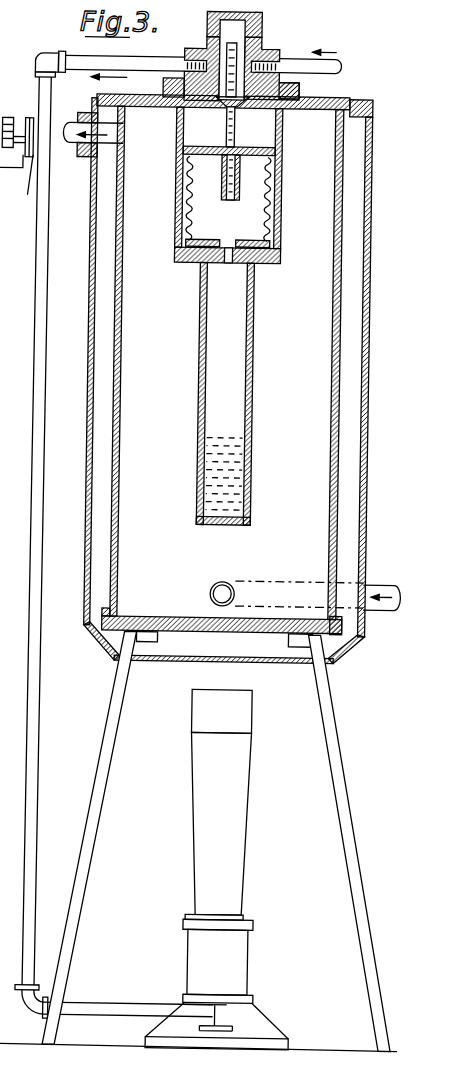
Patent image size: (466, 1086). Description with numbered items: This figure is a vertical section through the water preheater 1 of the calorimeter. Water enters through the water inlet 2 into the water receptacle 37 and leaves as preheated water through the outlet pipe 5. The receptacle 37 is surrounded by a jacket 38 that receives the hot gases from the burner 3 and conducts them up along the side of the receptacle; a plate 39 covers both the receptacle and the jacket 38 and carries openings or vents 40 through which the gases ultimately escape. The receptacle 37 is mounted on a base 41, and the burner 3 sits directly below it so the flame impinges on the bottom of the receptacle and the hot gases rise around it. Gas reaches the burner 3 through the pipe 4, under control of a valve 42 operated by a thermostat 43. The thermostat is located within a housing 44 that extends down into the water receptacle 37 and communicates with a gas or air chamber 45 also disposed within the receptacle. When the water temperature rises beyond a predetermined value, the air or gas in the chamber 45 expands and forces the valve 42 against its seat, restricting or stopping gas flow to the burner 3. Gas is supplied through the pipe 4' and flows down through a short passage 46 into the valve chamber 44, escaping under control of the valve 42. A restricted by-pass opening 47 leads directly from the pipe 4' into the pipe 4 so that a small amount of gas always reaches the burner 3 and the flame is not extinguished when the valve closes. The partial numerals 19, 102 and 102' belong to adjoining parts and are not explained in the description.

The water preheater 1 is at (204, 353).
The water inlet 2 is at (378, 584).
The burner 3 is at (242, 798).
The pipe 4 is at (33, 517).
The pipe 4' is at (203, 51).
The pipe 5 is at (107, 145).
The gas pipe 19 is at (107, 969).
The water receptacle 37 is at (112, 360).
The jacket 38 is at (364, 316).
The plate 39 is at (325, 96).
The openings or vents 40 is at (351, 98).
The base 41 is at (335, 724).
The valve 42 is at (228, 101).
The thermostat 43 is at (269, 162).
The housing 44 is at (276, 192).
The gas or air chamber 45 is at (237, 345).
The short passage 46 is at (244, 62).
The by-pass opening 47 is at (254, 42).
The valve fitting 102 is at (17, 120).
The valve fitting 102' is at (18, 181).